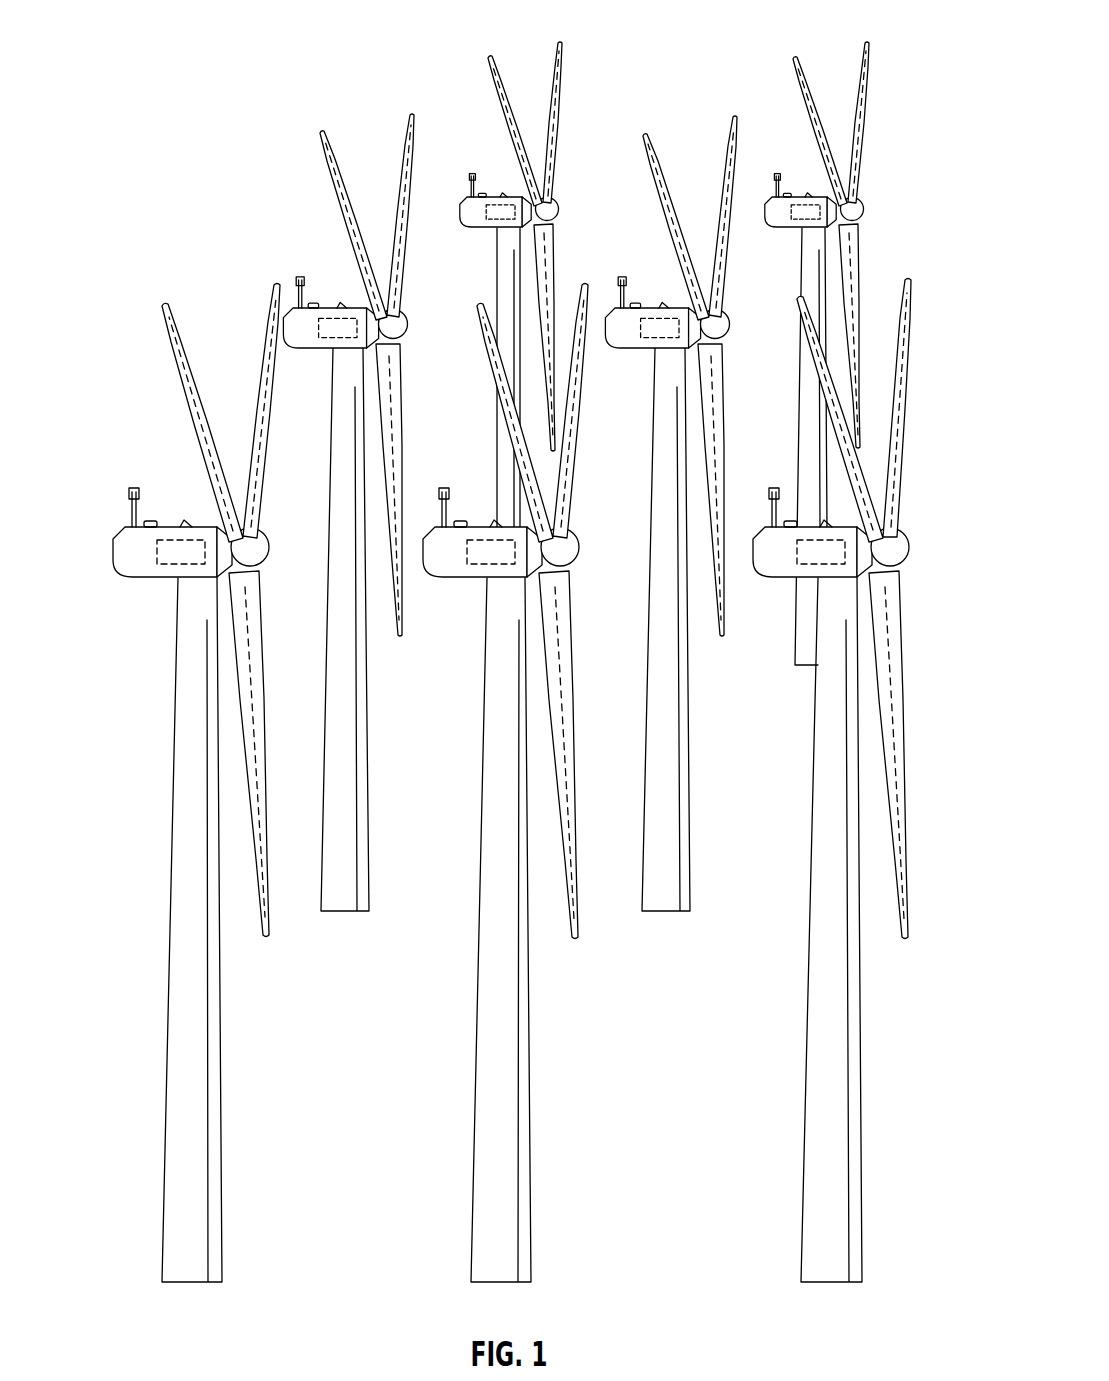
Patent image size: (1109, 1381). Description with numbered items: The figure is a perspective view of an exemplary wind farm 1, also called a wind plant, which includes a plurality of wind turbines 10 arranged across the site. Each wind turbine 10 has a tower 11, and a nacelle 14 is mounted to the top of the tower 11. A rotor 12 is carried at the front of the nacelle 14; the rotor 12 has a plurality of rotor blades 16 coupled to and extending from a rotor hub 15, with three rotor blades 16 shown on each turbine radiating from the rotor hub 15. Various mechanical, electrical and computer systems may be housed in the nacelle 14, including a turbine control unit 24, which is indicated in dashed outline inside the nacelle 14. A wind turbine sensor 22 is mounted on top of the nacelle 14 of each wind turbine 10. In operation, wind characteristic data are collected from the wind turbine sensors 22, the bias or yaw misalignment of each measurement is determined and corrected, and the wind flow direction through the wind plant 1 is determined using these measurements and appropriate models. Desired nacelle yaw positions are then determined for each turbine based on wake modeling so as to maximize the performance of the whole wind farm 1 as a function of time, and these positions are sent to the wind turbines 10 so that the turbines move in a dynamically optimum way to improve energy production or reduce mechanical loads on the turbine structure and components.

The wind farm 1 is at (246, 120).
The wind turbine 10 is at (274, 436).
The tower 11 is at (222, 1040).
The rotor 12 is at (271, 488).
The nacelle 14 is at (152, 578).
The rotor hub 15 is at (270, 548).
The rotor blade 16 is at (172, 356).
The wind turbine sensor 22 is at (130, 492).
The turbine control unit 24 is at (182, 538).